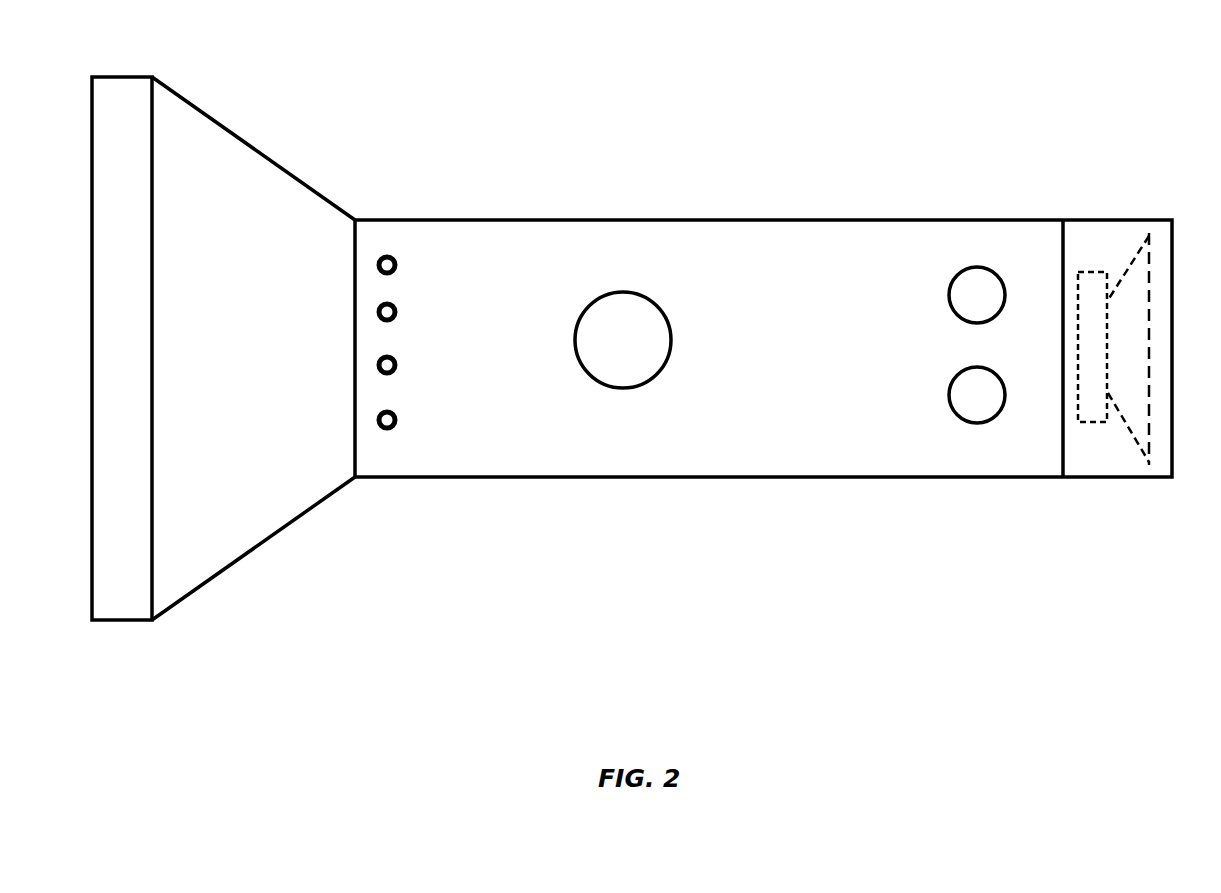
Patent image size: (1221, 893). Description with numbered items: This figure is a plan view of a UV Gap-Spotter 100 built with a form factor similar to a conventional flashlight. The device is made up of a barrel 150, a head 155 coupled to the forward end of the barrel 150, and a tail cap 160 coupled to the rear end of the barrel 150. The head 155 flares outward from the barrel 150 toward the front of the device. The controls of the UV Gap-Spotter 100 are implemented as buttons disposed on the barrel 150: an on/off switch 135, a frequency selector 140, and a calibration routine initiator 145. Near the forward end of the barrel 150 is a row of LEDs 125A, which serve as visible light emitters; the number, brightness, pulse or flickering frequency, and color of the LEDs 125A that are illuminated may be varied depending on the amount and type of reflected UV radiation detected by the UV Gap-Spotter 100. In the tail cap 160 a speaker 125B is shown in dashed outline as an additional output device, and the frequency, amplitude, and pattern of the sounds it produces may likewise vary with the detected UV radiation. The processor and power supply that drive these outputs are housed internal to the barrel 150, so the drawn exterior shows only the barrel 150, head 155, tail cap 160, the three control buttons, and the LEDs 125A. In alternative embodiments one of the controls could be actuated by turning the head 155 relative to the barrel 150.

The UV Gap-Spotter 100 is at (917, 83).
The LEDs 125A is at (405, 245).
The speaker 125B is at (1132, 412).
The on/off switch 135 is at (630, 310).
The frequency selector 140 is at (962, 308).
The calibration routine initiator 145 is at (965, 402).
The barrel 150 is at (518, 245).
The head 155 is at (252, 210).
The tail cap 160 is at (1082, 233).